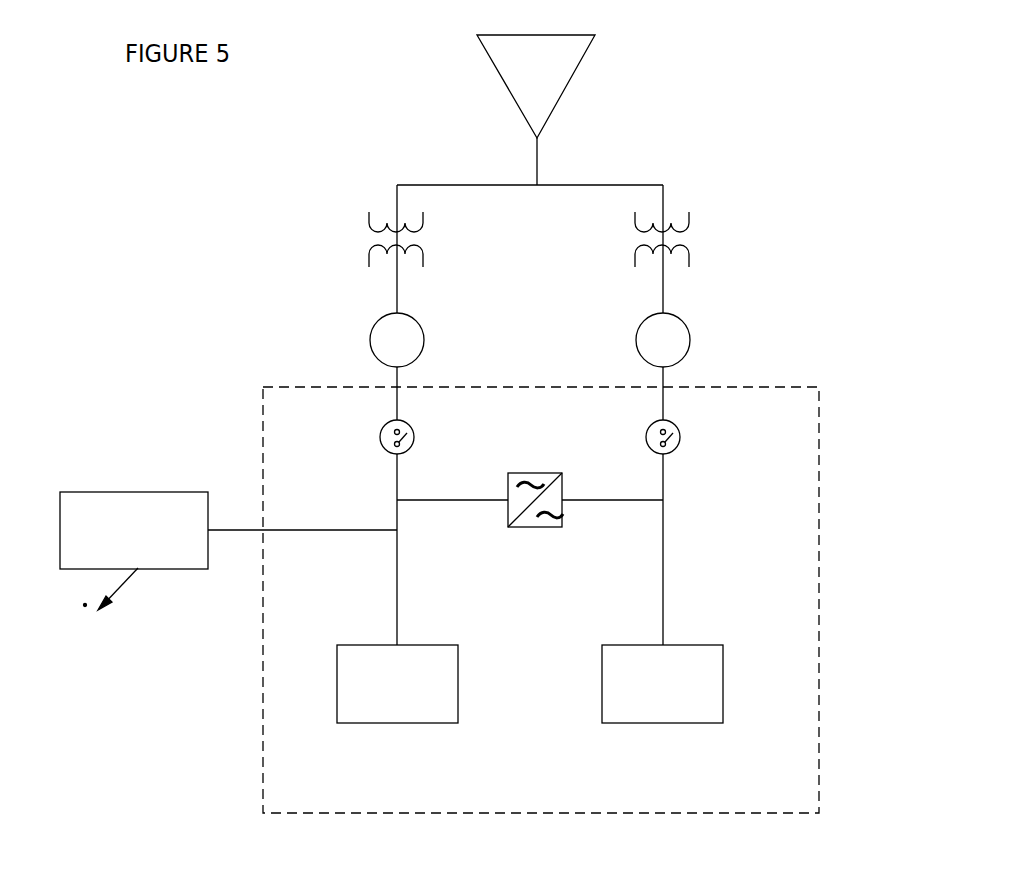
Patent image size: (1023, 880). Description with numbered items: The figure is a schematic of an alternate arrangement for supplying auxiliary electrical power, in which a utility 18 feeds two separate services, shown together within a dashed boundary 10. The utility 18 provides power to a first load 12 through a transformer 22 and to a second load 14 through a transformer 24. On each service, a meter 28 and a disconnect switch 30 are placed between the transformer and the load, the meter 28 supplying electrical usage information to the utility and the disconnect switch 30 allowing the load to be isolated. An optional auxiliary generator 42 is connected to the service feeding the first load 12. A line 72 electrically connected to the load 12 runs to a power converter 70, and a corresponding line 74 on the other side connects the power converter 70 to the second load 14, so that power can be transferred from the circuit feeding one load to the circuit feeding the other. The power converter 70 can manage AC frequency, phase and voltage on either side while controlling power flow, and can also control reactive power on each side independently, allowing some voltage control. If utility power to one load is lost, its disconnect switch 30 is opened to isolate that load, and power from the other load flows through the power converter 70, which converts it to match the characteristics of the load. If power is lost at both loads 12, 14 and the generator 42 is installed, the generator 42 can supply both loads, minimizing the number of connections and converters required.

The power system / facility boundary 10 is at (819, 597).
The load 12 is at (402, 724).
The load 14 is at (664, 723).
The utility 18 is at (558, 102).
The transformer 22 is at (369, 220).
The transformer 24 is at (688, 227).
The meter 28 is at (371, 340).
The disconnect switch 30 is at (380, 447).
The auxiliary generator 42 is at (139, 491).
The power converter 70 is at (508, 480).
The line 72 is at (437, 502).
The bus segment 74 is at (623, 502).